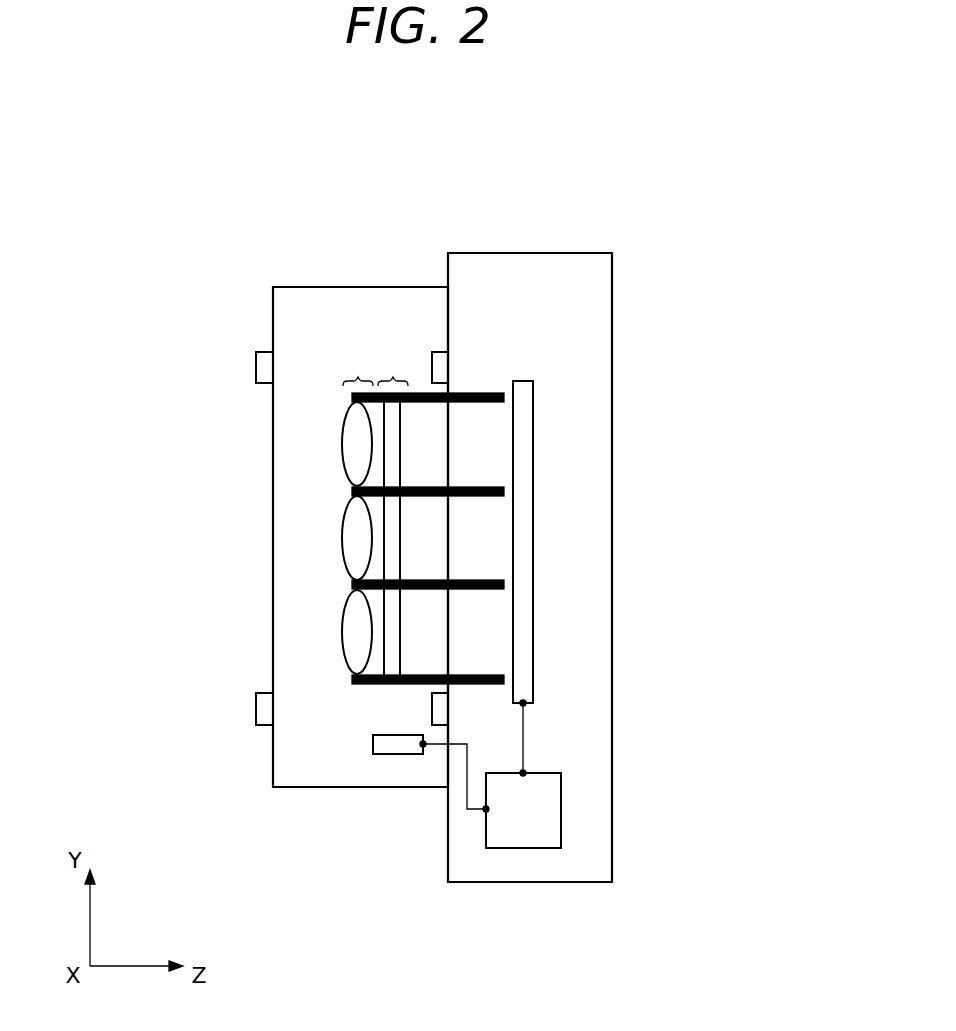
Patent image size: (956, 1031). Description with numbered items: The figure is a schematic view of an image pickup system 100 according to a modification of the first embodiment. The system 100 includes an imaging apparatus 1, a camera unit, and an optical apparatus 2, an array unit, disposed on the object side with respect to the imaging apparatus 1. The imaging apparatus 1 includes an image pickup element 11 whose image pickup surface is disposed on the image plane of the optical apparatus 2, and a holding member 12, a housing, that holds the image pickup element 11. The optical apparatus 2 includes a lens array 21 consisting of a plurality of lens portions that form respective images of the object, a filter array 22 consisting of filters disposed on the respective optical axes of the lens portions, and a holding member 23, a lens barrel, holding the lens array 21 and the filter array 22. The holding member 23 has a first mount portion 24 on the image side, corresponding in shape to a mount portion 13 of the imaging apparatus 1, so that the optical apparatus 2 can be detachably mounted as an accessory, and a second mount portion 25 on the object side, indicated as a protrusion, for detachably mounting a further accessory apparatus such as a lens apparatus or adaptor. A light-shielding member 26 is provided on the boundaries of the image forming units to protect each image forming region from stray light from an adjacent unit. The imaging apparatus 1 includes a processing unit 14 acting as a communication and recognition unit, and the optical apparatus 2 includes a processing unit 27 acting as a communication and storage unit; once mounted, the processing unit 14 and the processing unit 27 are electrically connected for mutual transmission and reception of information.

The image pickup system 100 is at (421, 982).
The imaging apparatus 1 is at (612, 175).
The optical apparatus 2 is at (254, 210).
The image pickup element 11 is at (518, 381).
The holding member 12 is at (580, 253).
The mount portion 13 is at (430, 708).
The processing unit 14 is at (561, 806).
The lens array 21 is at (358, 377).
The filter array 22 is at (393, 377).
The holding member 23 is at (295, 287).
The first mount portion 24 is at (311, 741).
The second mount portion 25 is at (267, 692).
The light-shielding member 26 is at (475, 392).
The processing unit 27 is at (392, 755).